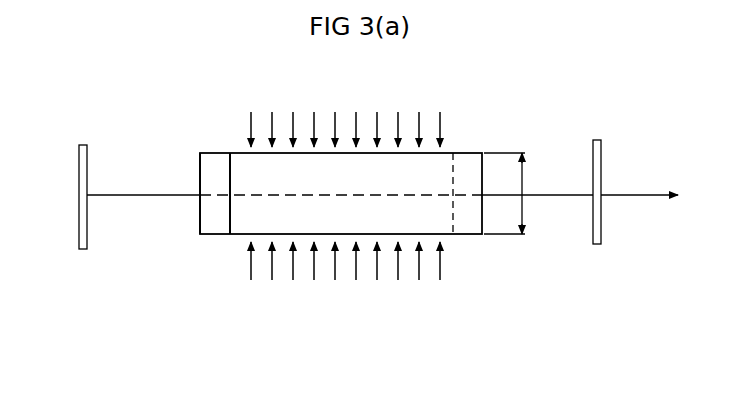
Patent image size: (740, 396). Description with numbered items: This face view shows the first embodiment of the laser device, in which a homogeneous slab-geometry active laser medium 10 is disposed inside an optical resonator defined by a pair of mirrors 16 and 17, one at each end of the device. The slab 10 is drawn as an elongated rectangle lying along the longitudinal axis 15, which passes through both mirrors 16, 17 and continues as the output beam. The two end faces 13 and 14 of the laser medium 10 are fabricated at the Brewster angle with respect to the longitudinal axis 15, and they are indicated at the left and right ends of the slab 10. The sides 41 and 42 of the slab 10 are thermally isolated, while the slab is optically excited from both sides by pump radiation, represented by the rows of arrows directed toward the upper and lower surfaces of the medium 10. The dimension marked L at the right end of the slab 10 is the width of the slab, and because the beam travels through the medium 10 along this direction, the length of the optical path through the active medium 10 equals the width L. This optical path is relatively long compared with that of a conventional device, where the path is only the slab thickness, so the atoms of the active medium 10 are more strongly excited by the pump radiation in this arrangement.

The slab-geometry active laser medium 10 is at (176, 181).
The end face 13 is at (208, 223).
The end face 14 is at (463, 223).
The longitudinal axis 15 is at (143, 200).
The mirror 16 is at (79, 153).
The mirror 17 is at (602, 167).
The side 41 is at (218, 237).
The side 42 is at (215, 153).
The width of the slab L is at (522, 182).